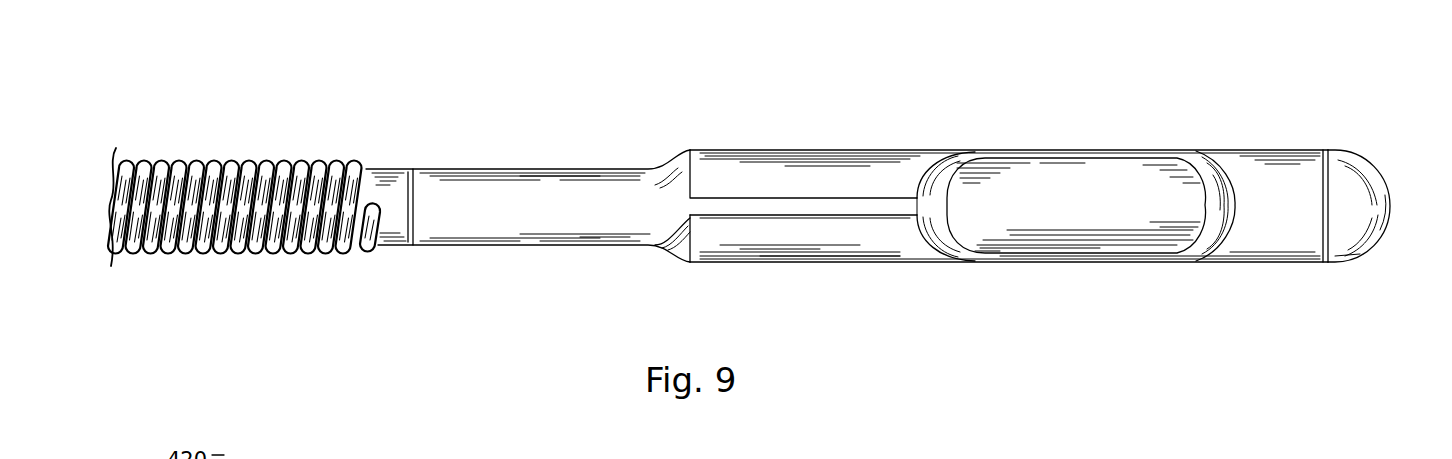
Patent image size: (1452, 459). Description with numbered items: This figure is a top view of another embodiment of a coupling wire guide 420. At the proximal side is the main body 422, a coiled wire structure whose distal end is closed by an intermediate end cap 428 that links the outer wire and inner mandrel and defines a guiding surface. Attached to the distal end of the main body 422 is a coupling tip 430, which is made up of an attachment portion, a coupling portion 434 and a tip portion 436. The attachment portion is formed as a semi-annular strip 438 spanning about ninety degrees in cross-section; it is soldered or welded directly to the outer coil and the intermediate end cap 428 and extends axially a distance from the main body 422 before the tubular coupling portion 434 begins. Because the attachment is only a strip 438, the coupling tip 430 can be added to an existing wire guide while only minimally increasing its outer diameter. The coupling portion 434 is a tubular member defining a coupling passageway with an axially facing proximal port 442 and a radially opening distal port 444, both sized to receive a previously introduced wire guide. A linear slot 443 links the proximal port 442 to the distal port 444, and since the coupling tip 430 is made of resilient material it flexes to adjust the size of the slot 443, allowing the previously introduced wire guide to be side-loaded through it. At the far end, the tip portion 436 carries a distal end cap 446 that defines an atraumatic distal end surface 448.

The coupling wire guide 420 is at (288, 76).
The main body 422 is at (197, 160).
The intermediate end cap 428 is at (399, 194).
The coupling tip 430 is at (657, 128).
The coupling portion 434 is at (770, 150).
The tip portion 436 is at (1253, 148).
The semi-annular strip 438 is at (510, 192).
The proximal port 442 is at (668, 240).
The linear slot 443 is at (776, 210).
The distal port 444 is at (978, 252).
The distal end cap 446 is at (1341, 230).
The distal end surface 448 is at (1386, 233).